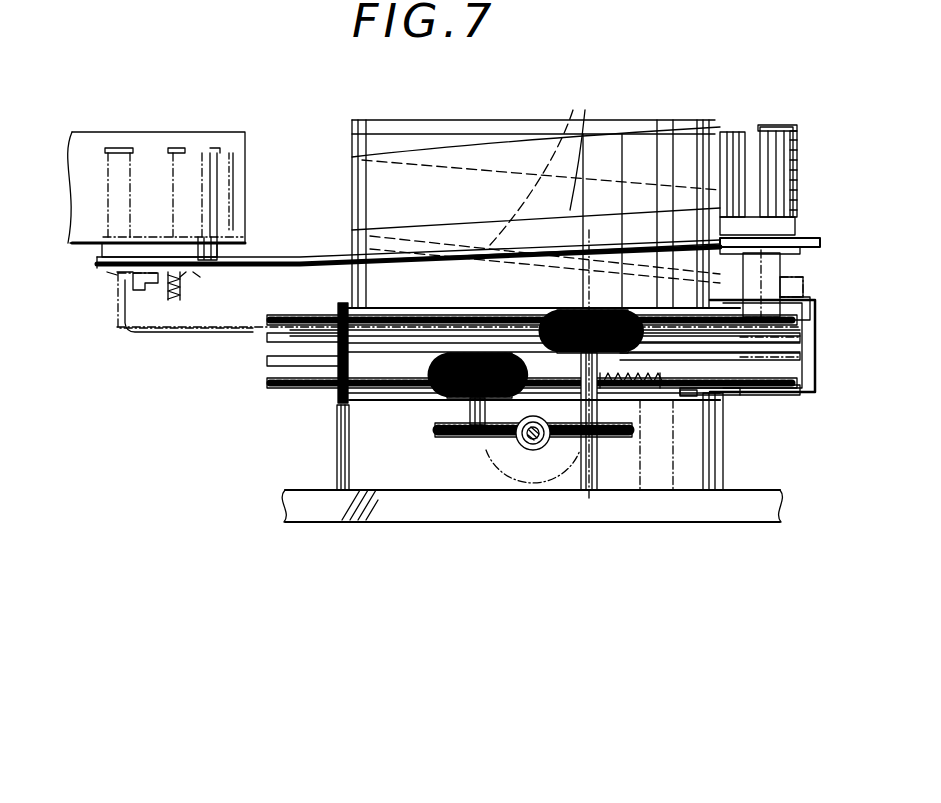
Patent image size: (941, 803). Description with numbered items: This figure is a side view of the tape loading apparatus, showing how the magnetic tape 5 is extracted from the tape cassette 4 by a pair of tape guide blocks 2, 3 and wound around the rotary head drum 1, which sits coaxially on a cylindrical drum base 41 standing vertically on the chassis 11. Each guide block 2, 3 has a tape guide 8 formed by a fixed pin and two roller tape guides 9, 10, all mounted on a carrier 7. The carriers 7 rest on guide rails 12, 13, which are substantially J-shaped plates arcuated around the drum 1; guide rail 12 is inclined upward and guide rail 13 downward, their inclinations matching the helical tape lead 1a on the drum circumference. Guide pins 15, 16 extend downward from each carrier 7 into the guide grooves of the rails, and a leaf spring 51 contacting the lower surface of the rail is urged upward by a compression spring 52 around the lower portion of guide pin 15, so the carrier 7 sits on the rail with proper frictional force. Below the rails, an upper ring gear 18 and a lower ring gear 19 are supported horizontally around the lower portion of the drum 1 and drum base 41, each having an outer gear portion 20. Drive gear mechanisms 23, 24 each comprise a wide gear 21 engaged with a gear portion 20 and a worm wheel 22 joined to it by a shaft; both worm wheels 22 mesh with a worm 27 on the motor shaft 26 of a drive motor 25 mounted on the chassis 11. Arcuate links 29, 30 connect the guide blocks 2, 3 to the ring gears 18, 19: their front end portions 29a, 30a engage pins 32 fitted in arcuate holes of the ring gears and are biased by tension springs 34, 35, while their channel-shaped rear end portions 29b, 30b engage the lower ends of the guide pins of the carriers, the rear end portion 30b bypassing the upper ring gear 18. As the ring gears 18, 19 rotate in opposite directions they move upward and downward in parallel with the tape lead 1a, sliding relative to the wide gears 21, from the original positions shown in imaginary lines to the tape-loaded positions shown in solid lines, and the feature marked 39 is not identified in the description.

The rotary head drum 1 is at (396, 134).
The helical tape lead 1a is at (543, 164).
The tape guide block 2 is at (92, 253).
The tape guide block 3 is at (814, 260).
The tape cassette 4 is at (92, 140).
The magnetic tape 5 is at (484, 140).
The carrier 7 is at (105, 255).
The tape guide 8 is at (214, 148).
The tape guide 9 is at (184, 148).
The tape guide 10 is at (125, 148).
The chassis 11 is at (782, 506).
The guide rail 12 is at (292, 258).
The guide rail 13 is at (331, 261).
The guide pin 15 is at (173, 302).
The guide pin 16 is at (124, 320).
The upper ring gear 18 is at (268, 340).
The lower ring gear 19 is at (268, 384).
The outer gear portion 20 is at (797, 306).
The gear 21 is at (478, 352).
The worm wheel 22 is at (450, 438).
The drive gear mechanism 23 is at (633, 412).
The drive gear mechanism 24 is at (428, 416).
The drive motor 25 is at (593, 460).
The motor shaft 26 is at (538, 450).
The worm 27 is at (527, 442).
The link 29 is at (134, 322).
The front end portion 29a is at (300, 320).
The rear end portion 29b is at (117, 314).
The link 30 is at (812, 378).
The front end portion 30a is at (697, 396).
The rear end portion 30b is at (806, 345).
The pin 32 is at (284, 315).
The tension spring 34 is at (348, 320).
The tension spring 35 is at (658, 388).
The connector 39 is at (218, 252).
The drum base 41 is at (337, 447).
The leaf spring 51 is at (197, 281).
The compression spring 52 is at (192, 302).